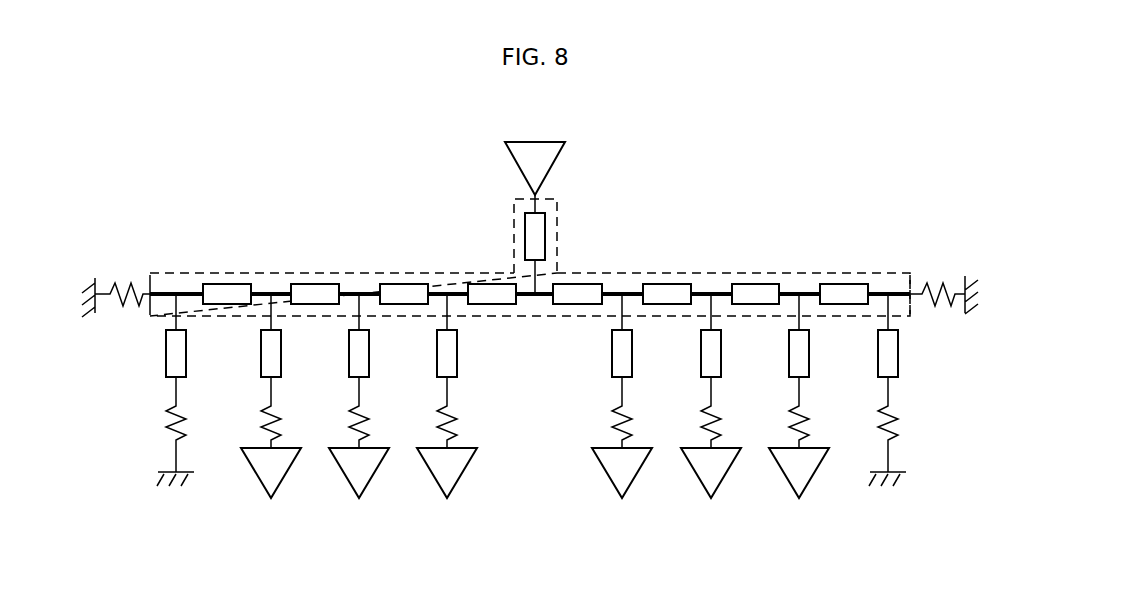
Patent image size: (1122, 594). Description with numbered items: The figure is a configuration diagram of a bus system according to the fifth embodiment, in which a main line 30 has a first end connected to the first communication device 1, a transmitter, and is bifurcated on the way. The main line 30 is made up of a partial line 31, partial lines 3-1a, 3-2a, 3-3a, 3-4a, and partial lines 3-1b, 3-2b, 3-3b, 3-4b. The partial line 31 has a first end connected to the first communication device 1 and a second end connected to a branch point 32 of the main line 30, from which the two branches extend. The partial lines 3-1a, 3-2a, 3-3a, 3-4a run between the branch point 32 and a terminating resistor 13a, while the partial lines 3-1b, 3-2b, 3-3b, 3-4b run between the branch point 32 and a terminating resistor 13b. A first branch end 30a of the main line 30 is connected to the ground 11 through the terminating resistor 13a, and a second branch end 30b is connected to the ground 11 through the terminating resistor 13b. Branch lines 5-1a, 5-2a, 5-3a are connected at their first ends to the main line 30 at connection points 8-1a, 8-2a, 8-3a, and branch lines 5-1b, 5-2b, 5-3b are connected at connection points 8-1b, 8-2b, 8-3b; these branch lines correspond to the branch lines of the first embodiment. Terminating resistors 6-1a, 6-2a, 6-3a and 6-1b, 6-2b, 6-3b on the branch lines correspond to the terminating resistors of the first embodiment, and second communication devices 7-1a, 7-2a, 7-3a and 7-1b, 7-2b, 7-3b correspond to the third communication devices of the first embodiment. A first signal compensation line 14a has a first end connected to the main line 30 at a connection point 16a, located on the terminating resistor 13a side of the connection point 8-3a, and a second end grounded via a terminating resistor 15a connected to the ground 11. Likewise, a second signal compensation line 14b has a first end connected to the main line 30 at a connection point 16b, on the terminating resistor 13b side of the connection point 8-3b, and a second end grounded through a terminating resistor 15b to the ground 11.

The first communication device 1 is at (534, 142).
The partial line 31 is at (546, 222).
The main line 30 is at (482, 318).
The branch point 32 is at (535, 303).
The first branch end 30a is at (905, 292).
The second branch end 30b is at (148, 292).
The terminating resistor 13a is at (935, 286).
The terminating resistor 13b is at (103, 290).
The ground 11 is at (93, 280).
The connection point 16a is at (888, 292).
The connection point 16b is at (177, 292).
The first signal compensation line 14a is at (898, 353).
The second signal compensation line 14b is at (166, 357).
The terminating resistor 15a is at (893, 435).
The terminating resistor 15b is at (171, 408).
The partial line 3-1a is at (577, 284).
The partial line 3-2a is at (660, 284).
The partial line 3-3a is at (750, 284).
The partial line 3-4a is at (840, 284).
The partial line 3-1b is at (488, 284).
The partial line 3-2b is at (395, 284).
The partial line 3-3b is at (310, 284).
The partial line 3-4b is at (215, 284).
The connection point 8-1a is at (622, 292).
The connection point 8-2a is at (712, 292).
The connection point 8-3a is at (800, 292).
The connection point 8-1b is at (444, 292).
The connection point 8-2b is at (358, 292).
The connection point 8-3b is at (270, 292).
The branch line 5-1a is at (612, 360).
The branch line 5-2a is at (701, 360).
The branch line 5-3a is at (789, 360).
The branch line 5-1b is at (437, 360).
The branch line 5-2b is at (349, 360).
The branch line 5-3b is at (261, 360).
The terminating resistor 6-1a is at (617, 409).
The terminating resistor 6-2a is at (706, 409).
The terminating resistor 6-3a is at (794, 409).
The terminating resistor 6-1b is at (442, 409).
The terminating resistor 6-2b is at (354, 409).
The terminating resistor 6-3b is at (266, 409).
The second communication device 7-1a is at (613, 485).
The second communication device 7-2a is at (702, 485).
The second communication device 7-3a is at (790, 485).
The second communication device 7-1b is at (438, 485).
The second communication device 7-2b is at (350, 485).
The second communication device 7-3b is at (262, 485).